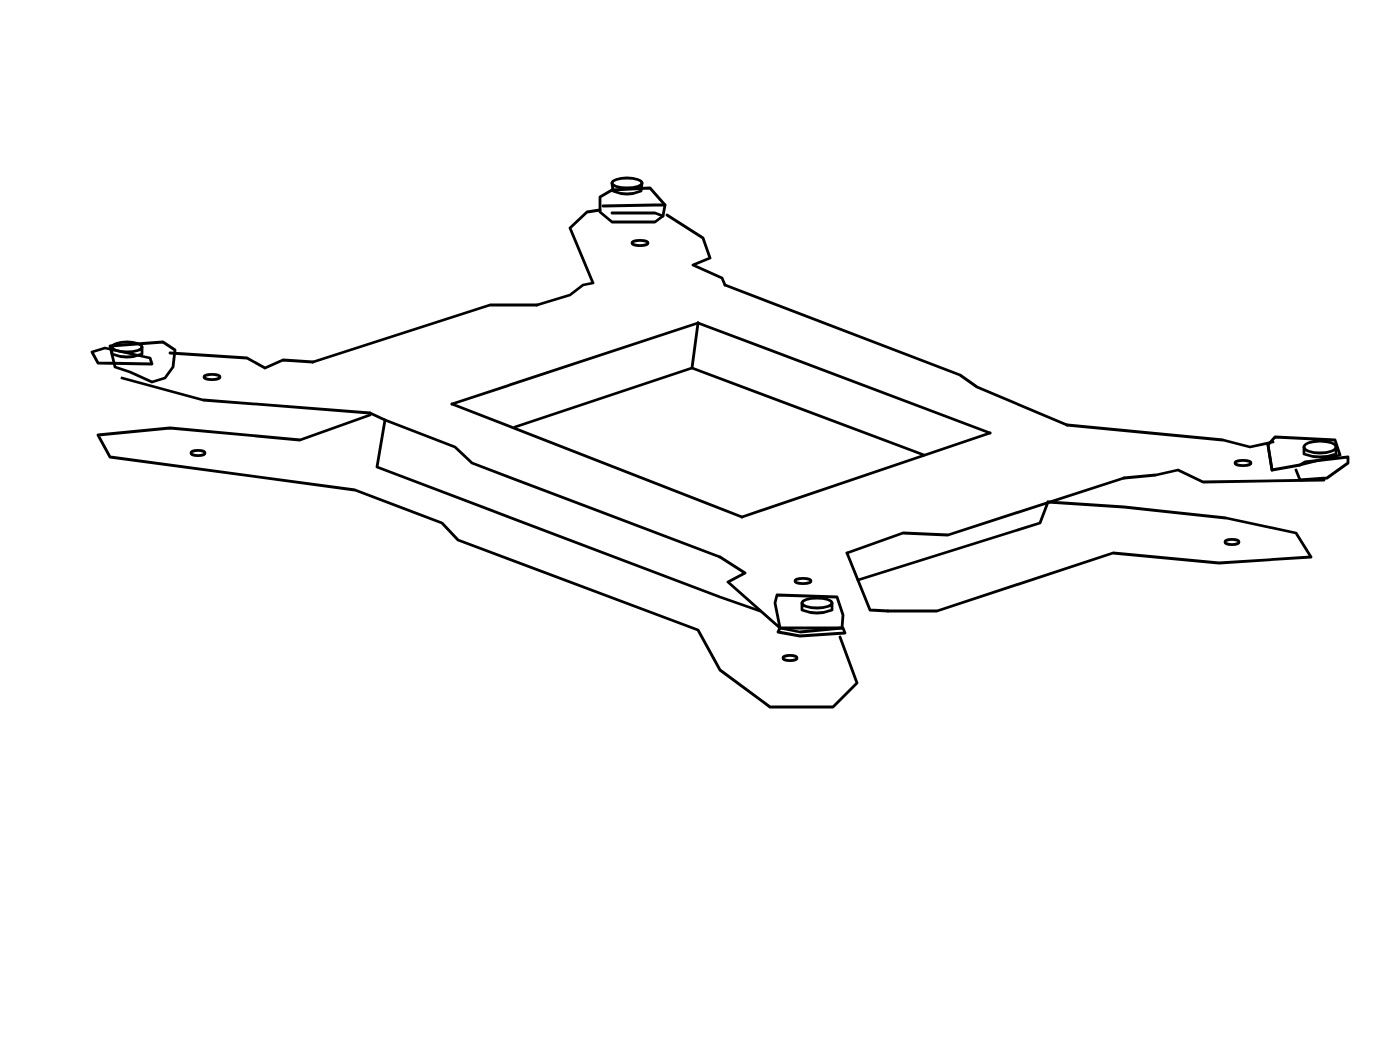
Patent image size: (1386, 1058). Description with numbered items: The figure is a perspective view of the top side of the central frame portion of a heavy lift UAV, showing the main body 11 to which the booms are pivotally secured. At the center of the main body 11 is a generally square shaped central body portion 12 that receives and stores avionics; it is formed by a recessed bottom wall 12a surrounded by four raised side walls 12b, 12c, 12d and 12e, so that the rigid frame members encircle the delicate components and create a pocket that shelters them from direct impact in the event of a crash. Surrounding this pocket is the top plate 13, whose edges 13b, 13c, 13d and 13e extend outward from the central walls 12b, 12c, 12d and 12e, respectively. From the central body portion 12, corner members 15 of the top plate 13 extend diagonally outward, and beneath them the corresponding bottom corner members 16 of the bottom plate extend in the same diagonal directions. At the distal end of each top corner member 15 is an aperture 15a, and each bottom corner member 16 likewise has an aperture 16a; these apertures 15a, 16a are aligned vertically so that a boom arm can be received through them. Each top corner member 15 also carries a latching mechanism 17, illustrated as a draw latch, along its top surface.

The main body 11 is at (262, 151).
The central body portion 12 is at (762, 396).
The recessed bottom wall 12a is at (840, 473).
The raised side wall 12b is at (820, 403).
The raised side wall 12c is at (917, 547).
The raised side wall 12d is at (633, 547).
The raised side wall 12e is at (520, 378).
The top plate 13 is at (1029, 405).
The top plate edge 13b is at (960, 375).
The top plate edge 13c is at (1103, 483).
The top plate edge 13d is at (502, 475).
The top plate edge 13e is at (408, 330).
The top corner member 15 is at (697, 232).
The aperture 15a is at (630, 243).
The bottom corner member 16 is at (255, 485).
The aperture 16a is at (202, 460).
The latching mechanism 17 is at (653, 195).